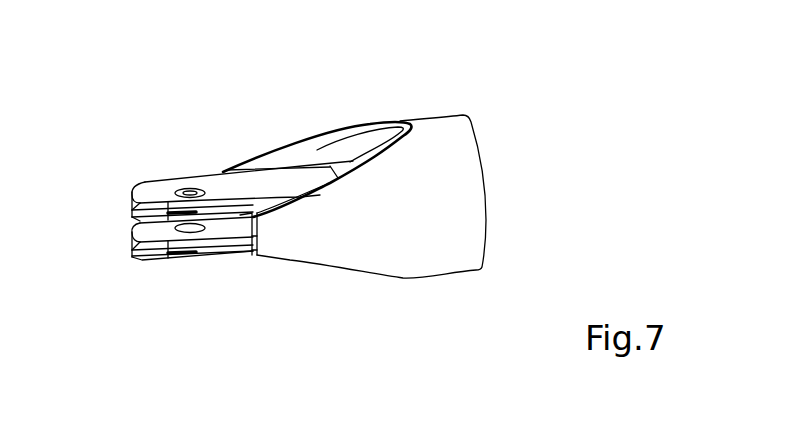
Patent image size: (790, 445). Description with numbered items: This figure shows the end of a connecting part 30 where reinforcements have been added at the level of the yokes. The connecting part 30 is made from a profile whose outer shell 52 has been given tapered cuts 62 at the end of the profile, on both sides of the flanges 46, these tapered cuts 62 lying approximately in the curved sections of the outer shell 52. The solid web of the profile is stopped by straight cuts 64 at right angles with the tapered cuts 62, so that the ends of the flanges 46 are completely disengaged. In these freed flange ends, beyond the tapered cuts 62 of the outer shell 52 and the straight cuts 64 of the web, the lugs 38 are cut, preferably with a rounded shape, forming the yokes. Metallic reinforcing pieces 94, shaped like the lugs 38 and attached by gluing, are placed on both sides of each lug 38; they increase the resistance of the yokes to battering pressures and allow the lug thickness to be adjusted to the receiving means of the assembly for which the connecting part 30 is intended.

The connecting part 30 is at (420, 290).
The lugs 38 is at (130, 202).
The flanges 46 is at (336, 167).
The outer shell 52 is at (457, 147).
The tapered cuts 62 is at (403, 126).
The straight cuts 64 is at (247, 238).
The reinforcing pieces 94 is at (158, 199).